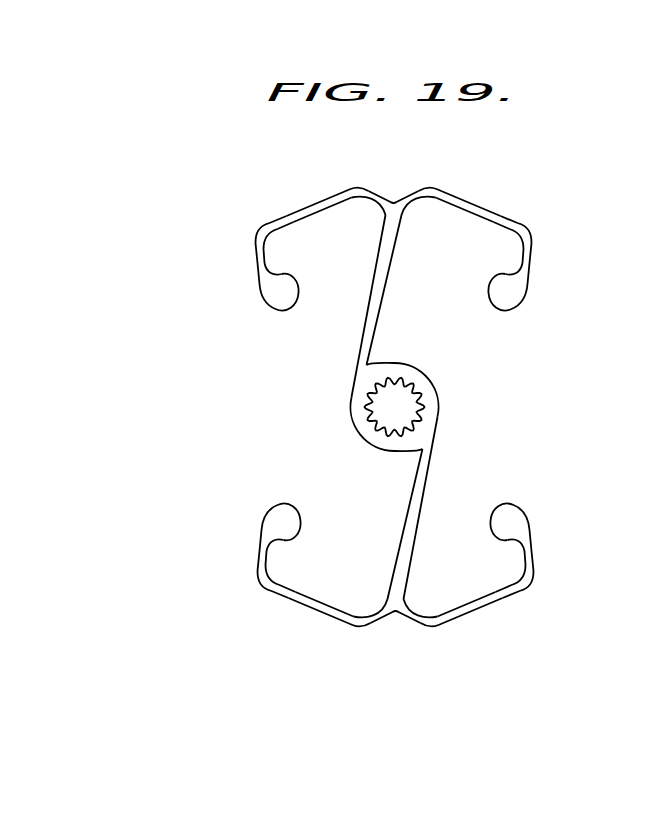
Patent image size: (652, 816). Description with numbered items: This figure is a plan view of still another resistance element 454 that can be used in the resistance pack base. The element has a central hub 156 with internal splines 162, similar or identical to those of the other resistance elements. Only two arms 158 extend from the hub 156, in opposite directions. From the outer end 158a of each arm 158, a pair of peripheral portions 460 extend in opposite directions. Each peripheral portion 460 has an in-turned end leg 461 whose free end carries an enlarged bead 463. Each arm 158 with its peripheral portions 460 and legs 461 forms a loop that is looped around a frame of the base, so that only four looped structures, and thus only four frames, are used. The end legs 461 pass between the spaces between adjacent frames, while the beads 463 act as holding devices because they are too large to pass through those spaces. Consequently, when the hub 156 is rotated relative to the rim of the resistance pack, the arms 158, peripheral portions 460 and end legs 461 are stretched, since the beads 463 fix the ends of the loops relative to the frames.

The resistance element 454 is at (543, 388).
The peripheral portion 460 is at (304, 210).
The end leg 461 is at (257, 253).
The bead 463 is at (275, 302).
The outer end 158a is at (392, 198).
The arm 158 is at (385, 270).
The hub 156 is at (404, 364).
The internal splines 162 is at (416, 393).